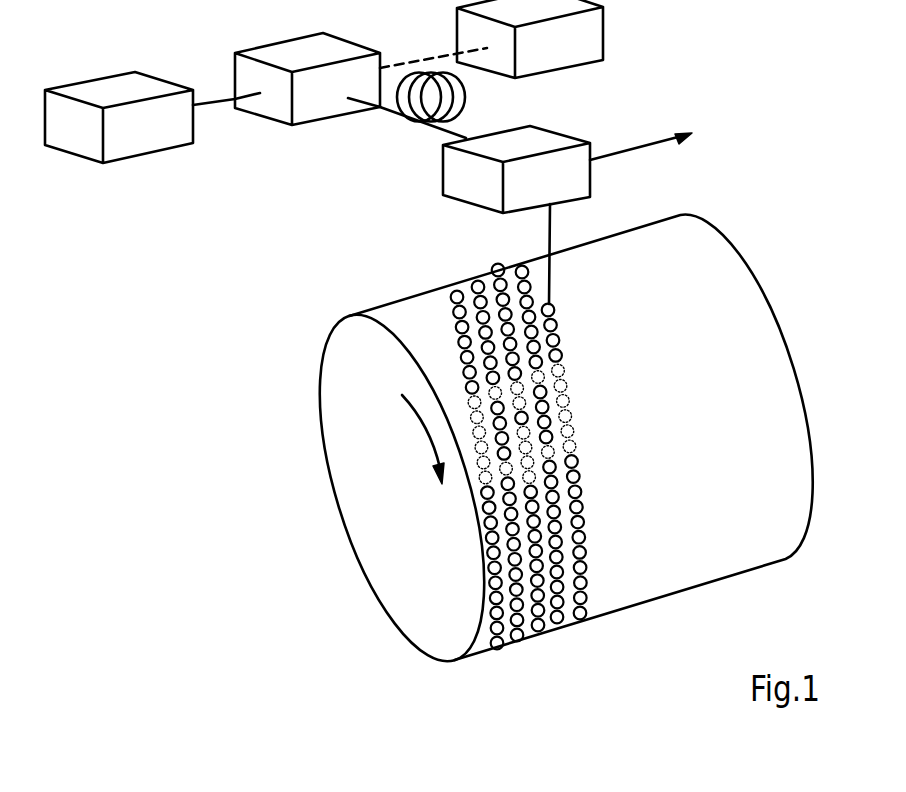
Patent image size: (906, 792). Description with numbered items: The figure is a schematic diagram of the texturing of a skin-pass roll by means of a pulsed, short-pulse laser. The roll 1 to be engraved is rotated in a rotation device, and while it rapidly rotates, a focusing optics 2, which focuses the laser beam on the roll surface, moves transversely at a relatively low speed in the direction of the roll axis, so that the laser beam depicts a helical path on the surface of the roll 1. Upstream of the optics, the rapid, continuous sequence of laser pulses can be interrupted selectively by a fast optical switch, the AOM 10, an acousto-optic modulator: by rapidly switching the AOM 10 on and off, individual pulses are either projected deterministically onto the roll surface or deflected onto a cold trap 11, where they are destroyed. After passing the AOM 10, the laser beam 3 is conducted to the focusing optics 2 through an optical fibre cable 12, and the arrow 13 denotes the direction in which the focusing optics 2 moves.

The roll 1 is at (647, 577).
The focusing optics 2 is at (462, 183).
The laser beam 3 is at (215, 98).
The AOM (acousto-optic modulator) 10 is at (278, 102).
The cold trap 11 is at (580, 42).
The optical fibre cable 12 is at (383, 113).
The arrow 13 is at (655, 147).